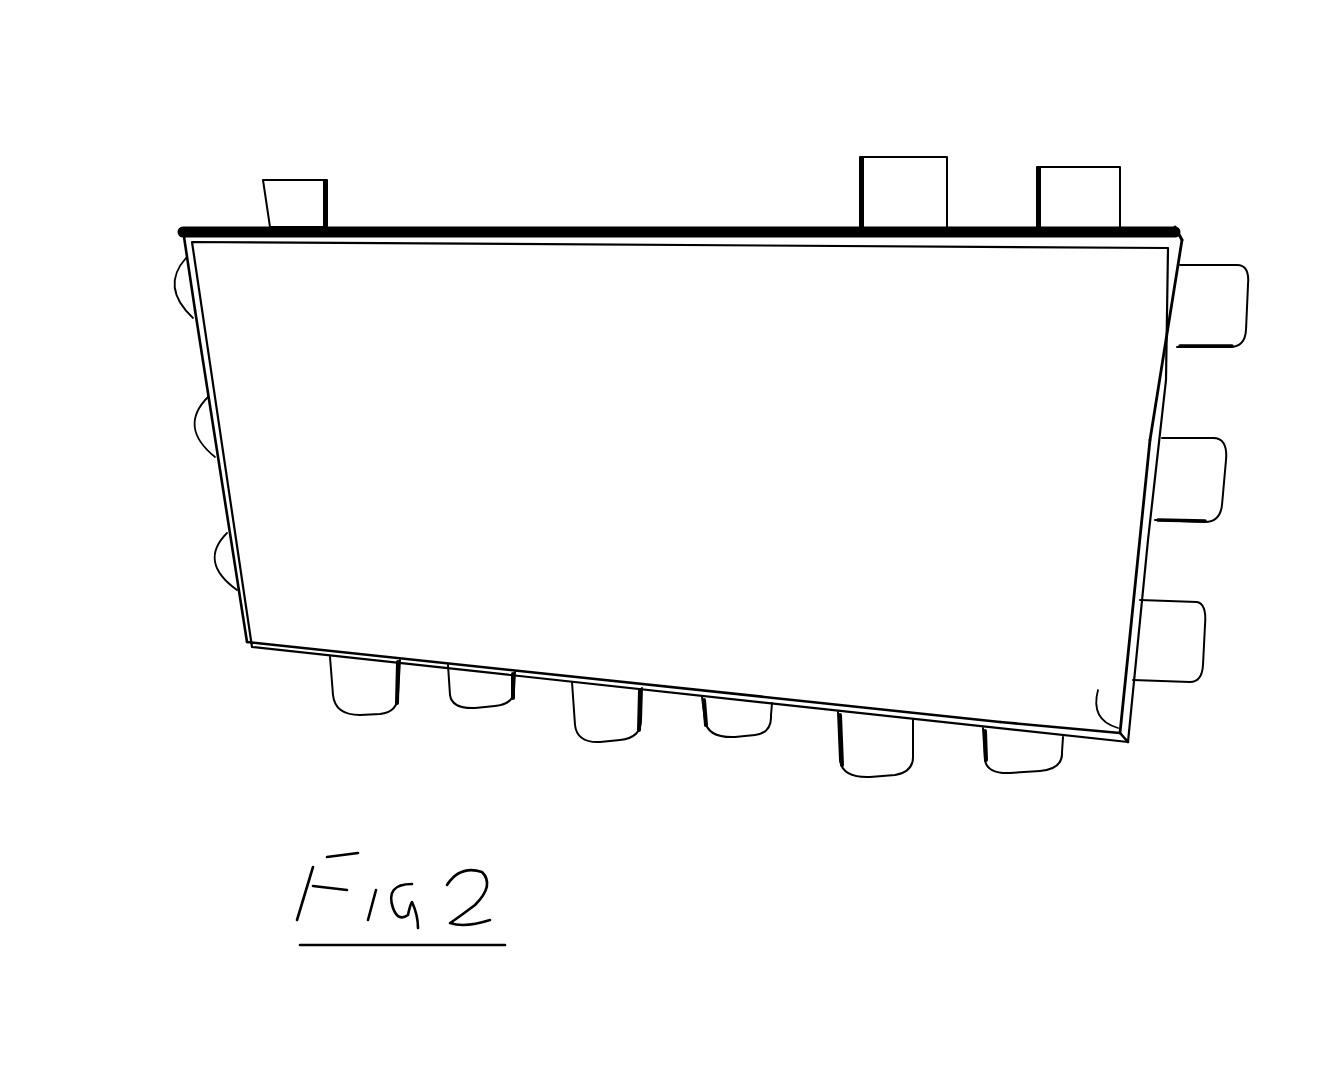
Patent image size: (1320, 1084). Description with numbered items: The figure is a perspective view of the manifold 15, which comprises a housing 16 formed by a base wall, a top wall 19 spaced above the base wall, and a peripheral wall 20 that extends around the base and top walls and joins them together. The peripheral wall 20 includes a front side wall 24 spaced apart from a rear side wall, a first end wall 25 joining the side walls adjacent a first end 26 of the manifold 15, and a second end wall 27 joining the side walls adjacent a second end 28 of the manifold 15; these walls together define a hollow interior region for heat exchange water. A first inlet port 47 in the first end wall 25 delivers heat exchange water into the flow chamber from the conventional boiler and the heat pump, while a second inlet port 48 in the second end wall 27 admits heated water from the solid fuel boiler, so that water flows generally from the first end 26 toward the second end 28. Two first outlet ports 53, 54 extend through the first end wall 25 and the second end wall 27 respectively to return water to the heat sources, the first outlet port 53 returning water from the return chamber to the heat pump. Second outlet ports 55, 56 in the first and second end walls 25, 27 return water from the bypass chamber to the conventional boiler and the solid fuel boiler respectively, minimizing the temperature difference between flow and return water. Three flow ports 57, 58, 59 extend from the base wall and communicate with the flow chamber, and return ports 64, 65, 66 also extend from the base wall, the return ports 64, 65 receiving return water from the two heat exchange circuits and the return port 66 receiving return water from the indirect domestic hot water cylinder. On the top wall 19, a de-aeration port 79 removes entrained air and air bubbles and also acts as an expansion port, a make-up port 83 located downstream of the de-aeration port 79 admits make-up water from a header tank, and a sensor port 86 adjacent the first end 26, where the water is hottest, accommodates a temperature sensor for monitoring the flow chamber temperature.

The manifold 15 is at (195, 112).
The housing 16 is at (1145, 230).
The top wall 19 is at (628, 225).
The peripheral wall 20 is at (1128, 737).
The front side wall 24 is at (298, 627).
The first end wall 25 is at (200, 362).
The first end 26 is at (187, 237).
The second end wall 27 is at (1168, 390).
The second end 28 is at (1152, 557).
The first inlet port 47 is at (180, 285).
The second inlet port 48 is at (1228, 295).
The first outlet port 53 is at (220, 570).
The first outlet port 54 is at (1180, 612).
The second outlet port 55 is at (203, 435).
The second outlet port 56 is at (1187, 453).
The flow port 57 is at (363, 710).
The flow port 58 is at (603, 735).
The flow port 59 is at (878, 767).
The return port 64 is at (477, 700).
The return port 65 is at (740, 732).
The return port 66 is at (1025, 768).
The de-aeration port 79 is at (890, 155).
The make-up port 83 is at (1073, 180).
The sensor port 86 is at (303, 187).